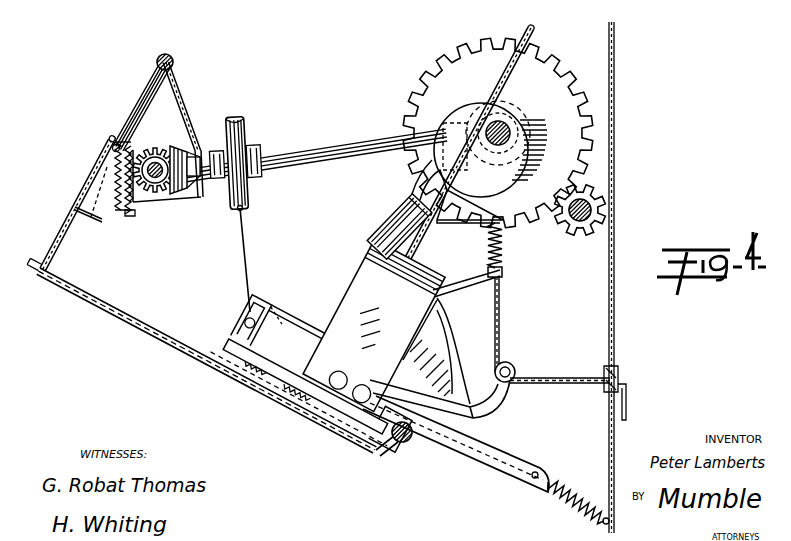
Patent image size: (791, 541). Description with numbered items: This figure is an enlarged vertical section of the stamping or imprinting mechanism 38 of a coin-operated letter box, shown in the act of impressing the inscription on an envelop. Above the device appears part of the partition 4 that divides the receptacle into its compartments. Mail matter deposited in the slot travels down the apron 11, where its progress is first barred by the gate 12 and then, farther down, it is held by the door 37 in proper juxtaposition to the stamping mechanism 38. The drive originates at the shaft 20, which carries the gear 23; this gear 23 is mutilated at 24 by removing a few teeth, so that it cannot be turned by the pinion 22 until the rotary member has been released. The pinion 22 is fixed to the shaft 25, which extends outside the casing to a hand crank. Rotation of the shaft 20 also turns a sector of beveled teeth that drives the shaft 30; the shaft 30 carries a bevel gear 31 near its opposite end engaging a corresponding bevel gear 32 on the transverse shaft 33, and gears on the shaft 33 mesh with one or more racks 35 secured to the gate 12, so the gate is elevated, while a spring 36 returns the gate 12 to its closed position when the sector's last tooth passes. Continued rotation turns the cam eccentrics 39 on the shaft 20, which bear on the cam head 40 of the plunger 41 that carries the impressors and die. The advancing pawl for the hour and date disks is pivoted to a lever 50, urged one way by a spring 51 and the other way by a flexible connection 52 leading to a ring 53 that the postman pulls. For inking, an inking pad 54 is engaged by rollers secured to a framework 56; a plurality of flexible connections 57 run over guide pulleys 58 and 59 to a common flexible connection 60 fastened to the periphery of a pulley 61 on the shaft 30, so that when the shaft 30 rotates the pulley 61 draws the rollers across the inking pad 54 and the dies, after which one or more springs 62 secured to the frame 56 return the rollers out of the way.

The partition 4 is at (613, 100).
The apron 11 is at (207, 360).
The gate 12 is at (61, 232).
The shaft 20 is at (510, 127).
The pinion 22 is at (575, 228).
The gear 23 is at (493, 57).
The mutilated portion 24 is at (450, 70).
The shaft 25 is at (613, 205).
The shaft 30 is at (337, 147).
The bevel gear 31 is at (178, 188).
The bevel gear 32 is at (156, 152).
The transverse shaft 33 is at (154, 185).
The rack 35 is at (104, 217).
The spring 36 is at (137, 152).
The door 37 is at (392, 447).
The stamping or imprinting mechanism 38 is at (350, 290).
The cam eccentric 39 is at (532, 142).
The cam head 40 is at (427, 184).
The plunger 41 is at (413, 197).
The lever 50 is at (500, 275).
The spring 51 is at (500, 250).
The flexible connection 52 is at (500, 335).
The ring 53 is at (627, 406).
The inking pad 54 is at (468, 417).
The framework 56 is at (502, 468).
The flexible connection 57 is at (507, 457).
The guide pulley 58 is at (267, 383).
The guide pulley 59 is at (240, 333).
The common flexible connection 60 is at (250, 257).
The pulley 61 is at (252, 112).
The spring 62 is at (578, 504).